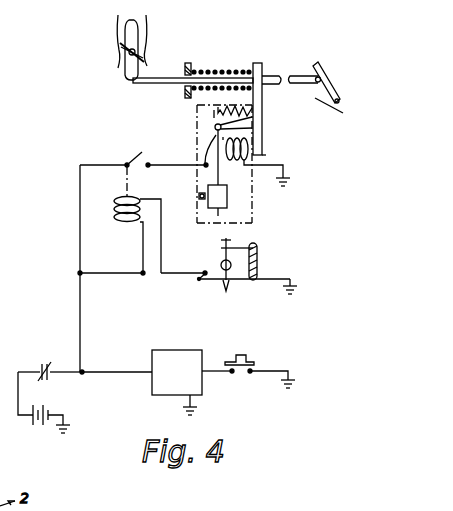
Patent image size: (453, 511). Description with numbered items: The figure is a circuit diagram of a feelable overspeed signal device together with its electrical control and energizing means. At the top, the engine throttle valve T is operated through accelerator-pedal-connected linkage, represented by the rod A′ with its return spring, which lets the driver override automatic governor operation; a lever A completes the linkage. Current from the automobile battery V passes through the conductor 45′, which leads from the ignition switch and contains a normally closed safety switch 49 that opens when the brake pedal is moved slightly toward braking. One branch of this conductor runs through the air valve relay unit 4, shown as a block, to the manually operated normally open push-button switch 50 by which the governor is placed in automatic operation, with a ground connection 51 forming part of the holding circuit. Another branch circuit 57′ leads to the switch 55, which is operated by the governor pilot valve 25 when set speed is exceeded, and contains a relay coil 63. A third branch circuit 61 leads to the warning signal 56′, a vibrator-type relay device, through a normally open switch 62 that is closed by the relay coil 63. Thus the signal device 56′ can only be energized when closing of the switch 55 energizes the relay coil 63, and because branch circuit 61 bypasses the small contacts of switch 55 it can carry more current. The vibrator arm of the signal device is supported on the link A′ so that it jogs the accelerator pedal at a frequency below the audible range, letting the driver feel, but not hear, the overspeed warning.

The engine throttle valve T is at (143, 52).
The rod A′ is at (270, 75).
The actuating lever A is at (316, 74).
The warning signal 56′ is at (190, 141).
The normally open switch 62 is at (136, 154).
The third branch circuit 61 is at (79, 214).
The relay coil 63 is at (118, 222).
The branch circuit 57′ is at (112, 274).
The series circuit conductor 45′ is at (80, 309).
The switch 55 is at (197, 284).
The pilot valve 25 is at (220, 248).
The normally closed switch 49 is at (48, 363).
The automobile battery V is at (36, 428).
The air valve relay unit 4 is at (149, 361).
The governor-energizer switch 50 is at (250, 356).
The holding circuit 51 is at (194, 402).